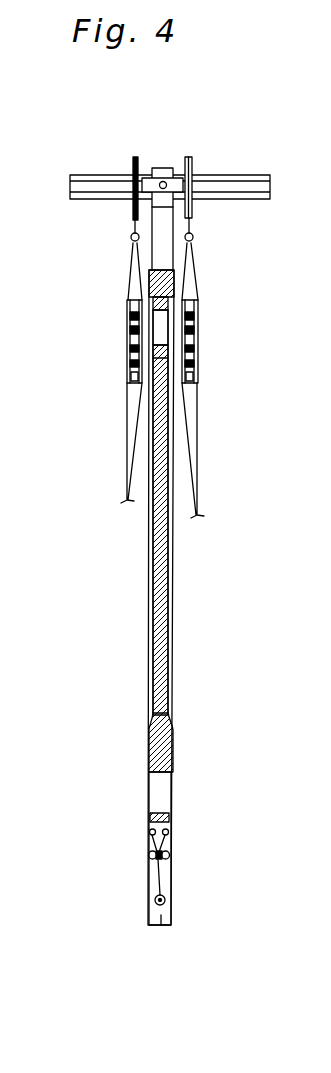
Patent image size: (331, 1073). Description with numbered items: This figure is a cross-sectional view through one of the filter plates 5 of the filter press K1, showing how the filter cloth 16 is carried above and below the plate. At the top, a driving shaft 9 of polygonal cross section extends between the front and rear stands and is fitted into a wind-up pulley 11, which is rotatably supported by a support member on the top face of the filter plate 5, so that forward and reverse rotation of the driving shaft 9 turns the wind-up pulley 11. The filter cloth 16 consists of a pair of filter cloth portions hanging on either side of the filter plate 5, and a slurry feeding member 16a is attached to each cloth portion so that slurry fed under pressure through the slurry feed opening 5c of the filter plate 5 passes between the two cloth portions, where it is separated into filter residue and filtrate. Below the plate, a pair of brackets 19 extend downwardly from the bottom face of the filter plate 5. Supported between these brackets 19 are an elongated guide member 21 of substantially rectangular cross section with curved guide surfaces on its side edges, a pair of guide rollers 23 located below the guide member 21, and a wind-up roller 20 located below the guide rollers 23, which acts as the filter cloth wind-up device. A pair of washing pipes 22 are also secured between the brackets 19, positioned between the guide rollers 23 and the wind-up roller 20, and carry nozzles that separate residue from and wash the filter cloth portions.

The driving shaft 9 is at (244, 183).
The wind-up pulley 11 is at (133, 158).
The filter plate 5 is at (162, 738).
The slurry feed opening 5c is at (162, 327).
The slurry feeding member 16a is at (125, 368).
The filter cloth 16 is at (127, 461).
The filter press K1 is at (203, 817).
The guide member 21 is at (152, 817).
The guide roller 23 is at (149, 832).
The washing pipe 22 is at (170, 862).
The wind-up roller 20 is at (166, 902).
The bracket 19 is at (162, 927).